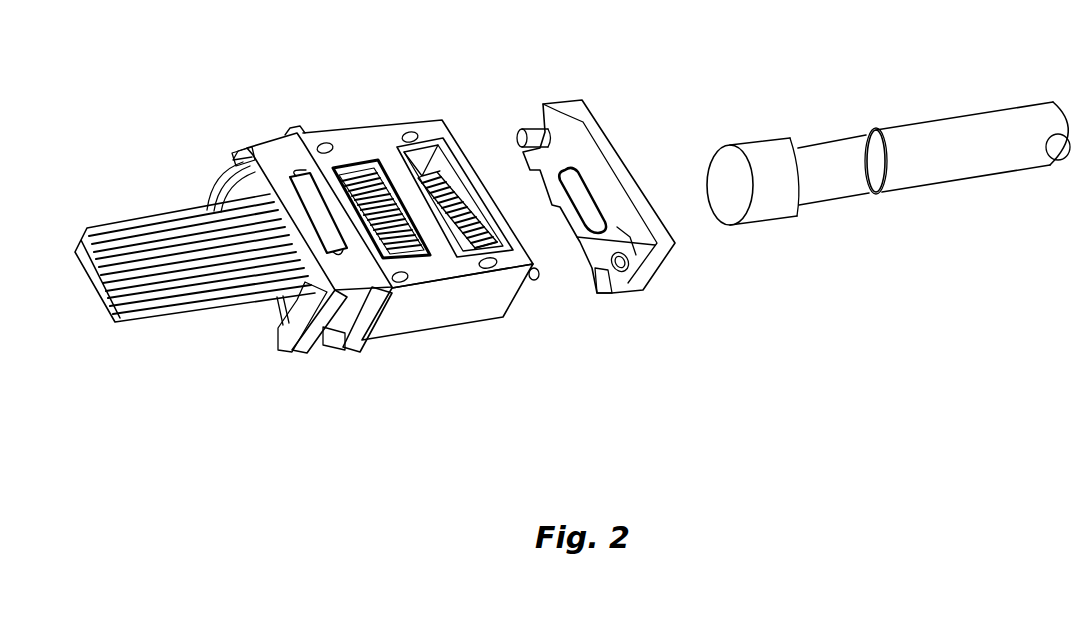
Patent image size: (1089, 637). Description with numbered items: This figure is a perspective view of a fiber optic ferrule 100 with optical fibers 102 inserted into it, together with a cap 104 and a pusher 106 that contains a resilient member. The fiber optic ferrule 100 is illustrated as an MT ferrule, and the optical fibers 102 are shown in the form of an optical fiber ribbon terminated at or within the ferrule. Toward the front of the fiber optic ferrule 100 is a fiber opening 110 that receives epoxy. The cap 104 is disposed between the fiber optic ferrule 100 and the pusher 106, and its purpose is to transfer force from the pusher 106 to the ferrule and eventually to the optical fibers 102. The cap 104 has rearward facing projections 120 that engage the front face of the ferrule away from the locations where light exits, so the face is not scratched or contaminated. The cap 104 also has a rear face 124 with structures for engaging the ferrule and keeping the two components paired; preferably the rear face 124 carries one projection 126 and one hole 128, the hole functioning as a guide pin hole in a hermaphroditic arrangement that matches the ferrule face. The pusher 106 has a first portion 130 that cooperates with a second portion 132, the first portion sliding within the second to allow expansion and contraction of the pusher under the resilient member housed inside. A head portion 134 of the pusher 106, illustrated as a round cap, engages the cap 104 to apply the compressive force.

The fiber optic ferrule 100 is at (384, 102).
The optical fibers 102 is at (190, 318).
The cap 104 is at (645, 292).
The pusher 106 is at (888, 148).
The fiber opening 110 is at (452, 172).
The rearward facing projections 120 is at (597, 294).
The rear face 124 is at (583, 162).
The projection 126 is at (524, 134).
The hole 128 is at (637, 270).
The first portion 130 is at (815, 140).
The second portion 132 is at (996, 107).
The head portion 134 is at (747, 143).